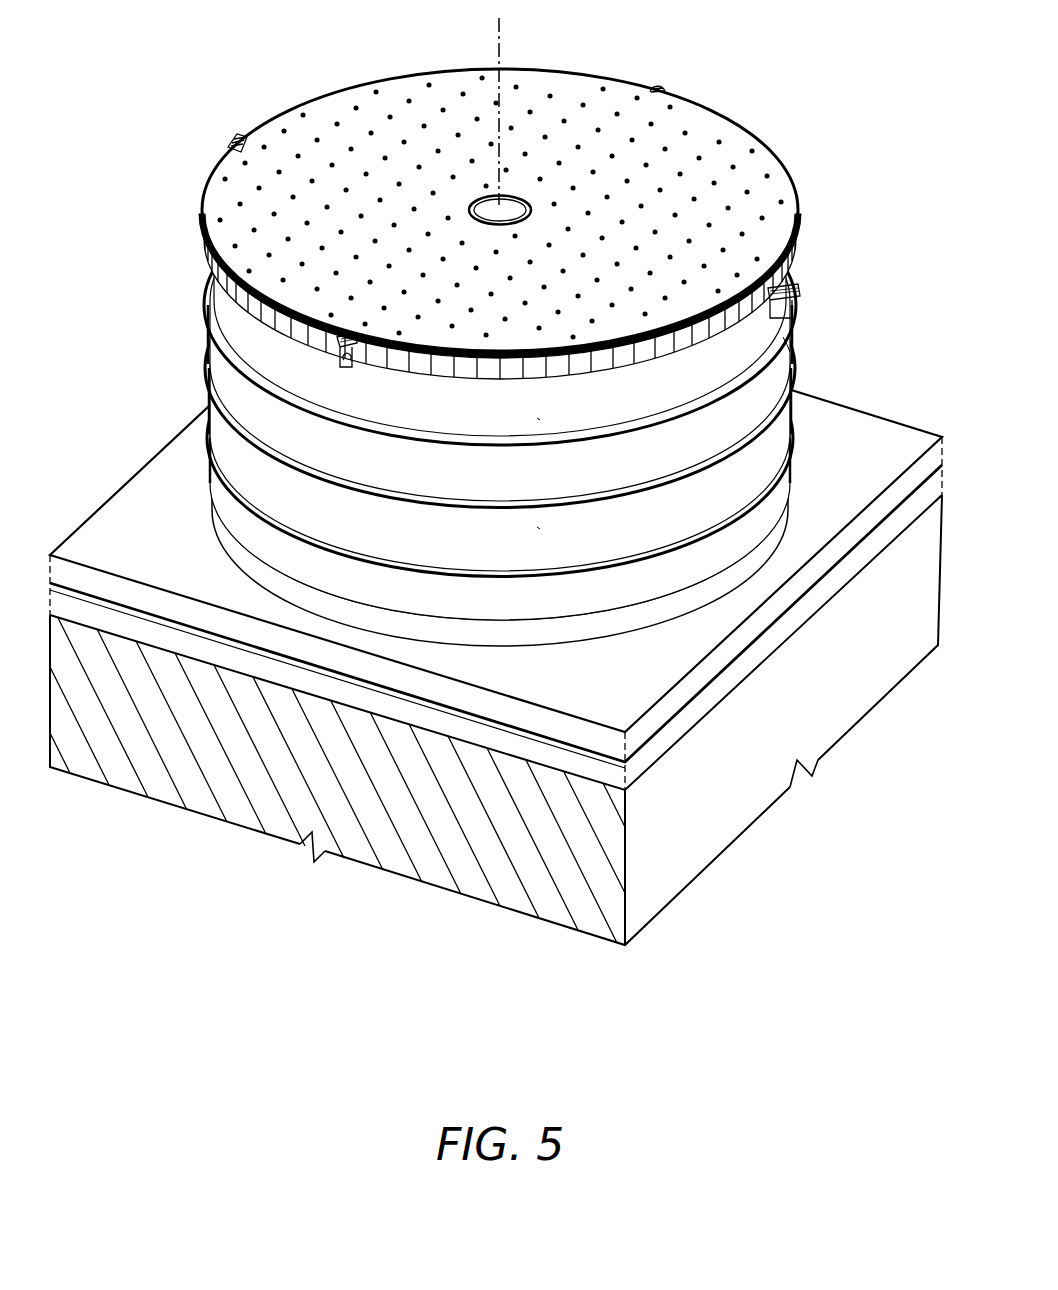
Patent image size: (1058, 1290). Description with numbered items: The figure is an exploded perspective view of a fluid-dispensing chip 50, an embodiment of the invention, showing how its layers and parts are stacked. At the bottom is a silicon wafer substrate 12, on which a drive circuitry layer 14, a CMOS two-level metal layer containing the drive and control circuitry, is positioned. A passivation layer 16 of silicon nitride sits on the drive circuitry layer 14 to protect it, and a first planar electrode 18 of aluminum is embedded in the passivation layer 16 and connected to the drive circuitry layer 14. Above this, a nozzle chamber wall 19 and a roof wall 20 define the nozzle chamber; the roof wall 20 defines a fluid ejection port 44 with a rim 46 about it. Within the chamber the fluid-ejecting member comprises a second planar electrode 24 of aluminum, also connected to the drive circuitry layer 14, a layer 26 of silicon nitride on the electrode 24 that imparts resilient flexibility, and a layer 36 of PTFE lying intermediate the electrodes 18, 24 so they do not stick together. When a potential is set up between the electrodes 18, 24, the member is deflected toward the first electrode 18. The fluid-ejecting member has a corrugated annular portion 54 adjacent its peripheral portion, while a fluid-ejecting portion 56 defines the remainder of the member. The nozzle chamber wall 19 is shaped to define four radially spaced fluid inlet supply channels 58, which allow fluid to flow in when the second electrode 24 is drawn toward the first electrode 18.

The silicon wafer substrate 12 is at (209, 803).
The drive circuitry layer 14 is at (116, 592).
The passivation layer 16 is at (137, 510).
The first planar electrode 18 is at (214, 465).
The nozzle chamber wall 19 is at (797, 243).
The roof wall 20 is at (732, 148).
The second planar electrode 24 is at (208, 367).
The layer of silicon nitride 26 is at (205, 285).
The layer of PTFE 36 is at (212, 415).
The fluid ejection port 44 is at (512, 190).
The rim 46 is at (528, 198).
The fluid-dispensing chip 50 is at (158, 122).
The corrugated annular portion 54 is at (795, 398).
The fluid-ejecting portion 56 is at (537, 527).
The fluid inlet supply channels 58 is at (330, 356).